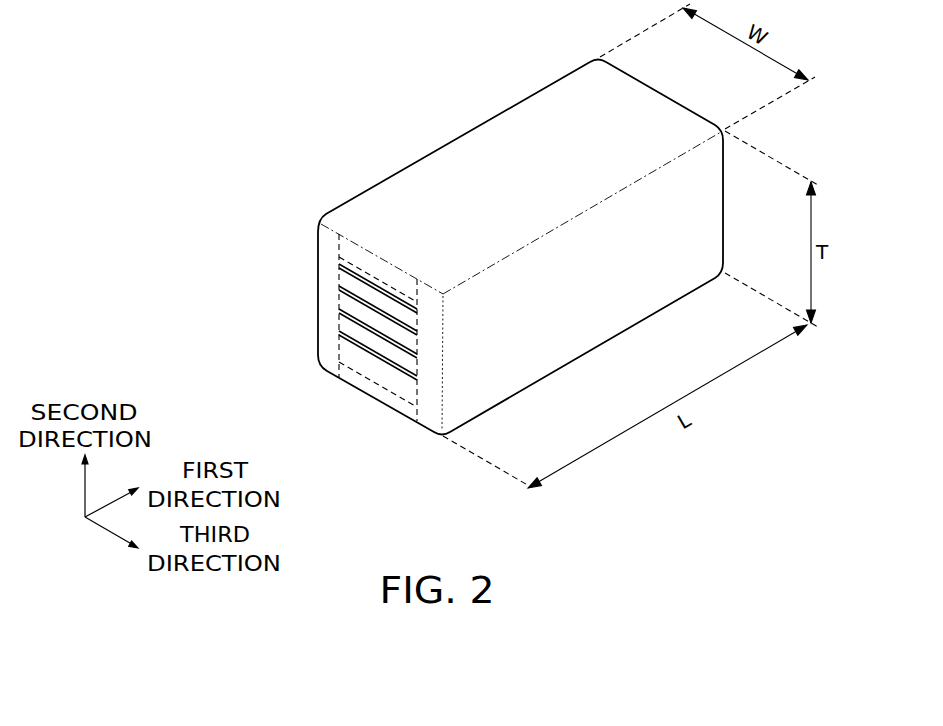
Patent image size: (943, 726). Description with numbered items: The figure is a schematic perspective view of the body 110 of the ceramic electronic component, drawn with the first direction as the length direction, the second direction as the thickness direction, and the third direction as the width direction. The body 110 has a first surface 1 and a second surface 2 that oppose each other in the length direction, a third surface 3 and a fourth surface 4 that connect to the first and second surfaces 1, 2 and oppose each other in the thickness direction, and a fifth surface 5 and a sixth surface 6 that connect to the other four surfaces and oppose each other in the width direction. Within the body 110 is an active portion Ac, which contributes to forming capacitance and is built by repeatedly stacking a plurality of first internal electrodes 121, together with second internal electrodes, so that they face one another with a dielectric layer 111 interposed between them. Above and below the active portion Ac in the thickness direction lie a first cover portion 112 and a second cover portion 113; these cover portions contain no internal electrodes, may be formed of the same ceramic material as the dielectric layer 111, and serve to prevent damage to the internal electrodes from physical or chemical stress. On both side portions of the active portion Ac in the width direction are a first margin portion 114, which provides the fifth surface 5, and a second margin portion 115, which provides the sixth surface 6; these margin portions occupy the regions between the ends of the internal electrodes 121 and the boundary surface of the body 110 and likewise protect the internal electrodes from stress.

The body 110 is at (305, 46).
The first surface 1 is at (362, 396).
The second surface 2 is at (687, 97).
The third surface 3 is at (515, 146).
The fourth surface 4 is at (543, 382).
The fifth surface 5 is at (372, 184).
The sixth surface 6 is at (599, 312).
The dielectric layer 111 is at (348, 311).
The first internal electrode 121 is at (360, 278).
The first cover portion 112 is at (354, 251).
The second cover portion 113 is at (358, 377).
The first margin portion 114 is at (322, 353).
The second margin portion 115 is at (430, 412).
The active portion Ac is at (422, 363).